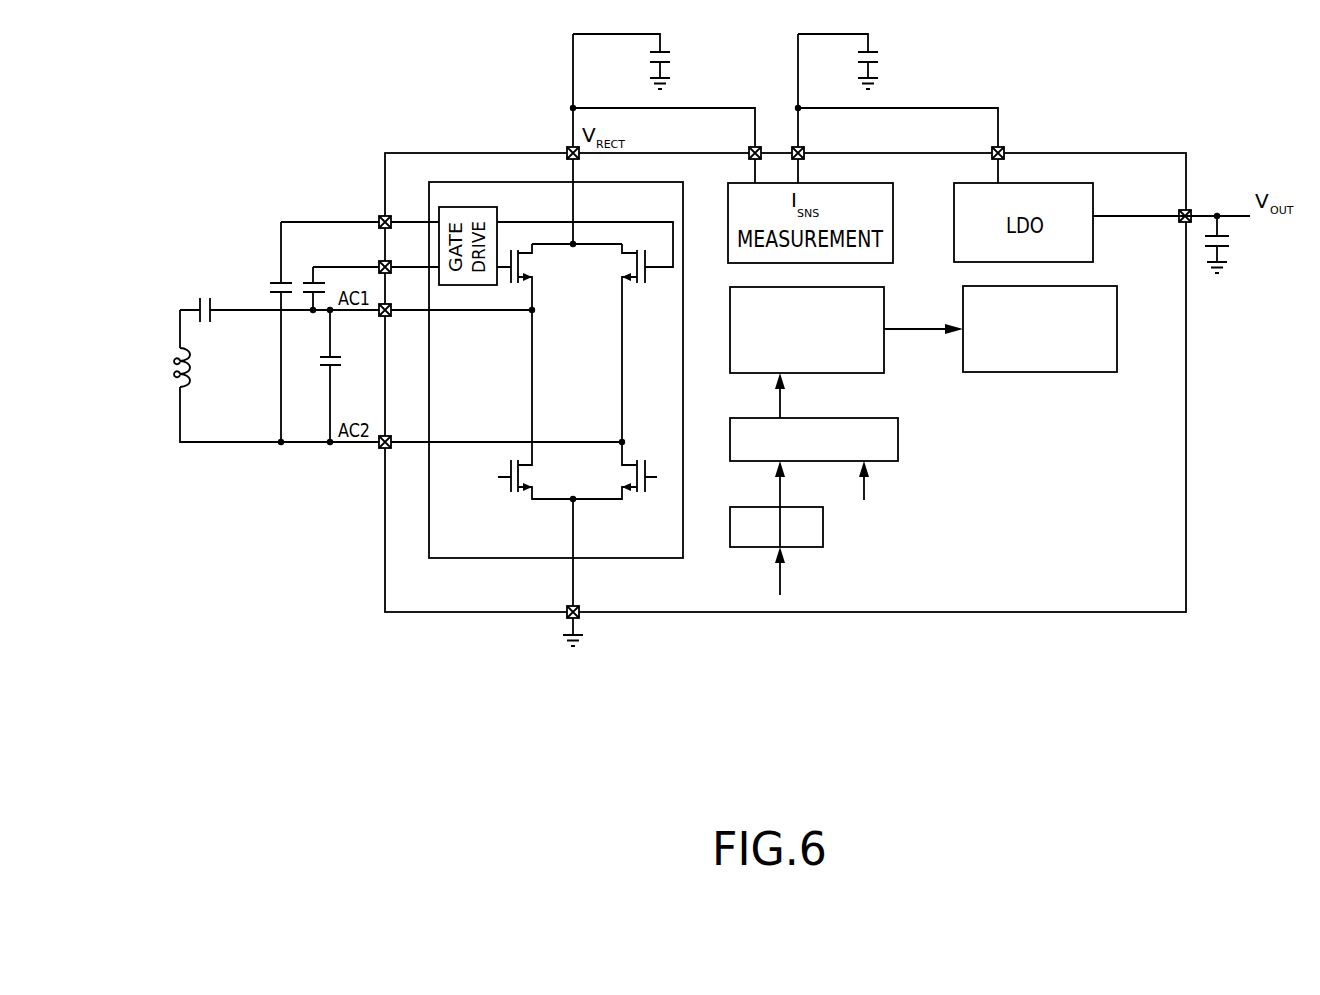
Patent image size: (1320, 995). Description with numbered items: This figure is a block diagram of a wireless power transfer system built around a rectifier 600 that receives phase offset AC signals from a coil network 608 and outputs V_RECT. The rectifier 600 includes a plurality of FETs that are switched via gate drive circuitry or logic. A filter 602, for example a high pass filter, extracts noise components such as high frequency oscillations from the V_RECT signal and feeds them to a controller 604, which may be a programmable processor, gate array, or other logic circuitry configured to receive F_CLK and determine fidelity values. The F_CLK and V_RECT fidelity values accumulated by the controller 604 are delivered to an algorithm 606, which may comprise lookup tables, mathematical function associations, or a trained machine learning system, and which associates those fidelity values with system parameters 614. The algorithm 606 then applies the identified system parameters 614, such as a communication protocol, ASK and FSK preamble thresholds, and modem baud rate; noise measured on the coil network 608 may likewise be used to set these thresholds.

The rectifier 600 is at (429, 193).
The filter 602 is at (808, 547).
The controller 604 is at (898, 435).
The algorithm 606 is at (885, 300).
The coil network 608 is at (168, 350).
The system parameters 614 is at (1082, 372).